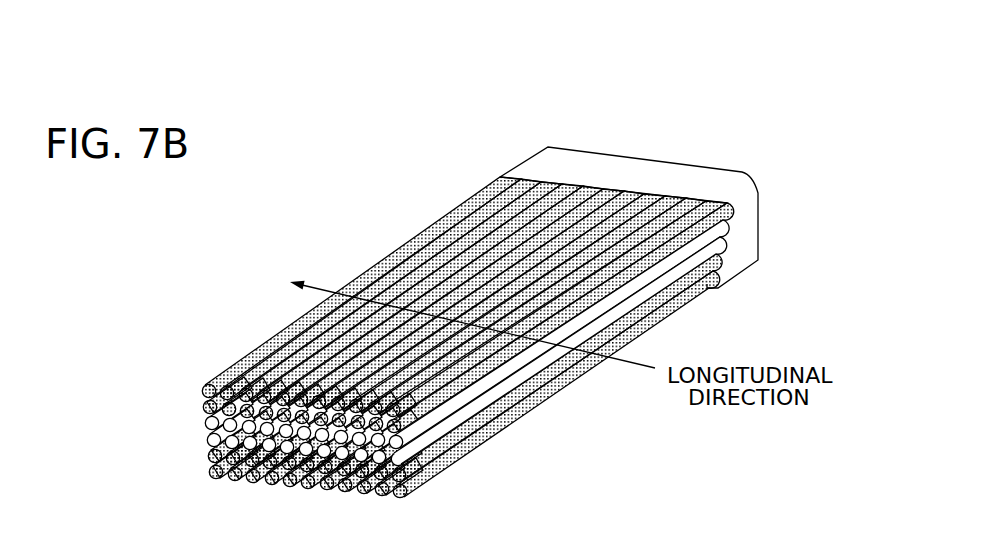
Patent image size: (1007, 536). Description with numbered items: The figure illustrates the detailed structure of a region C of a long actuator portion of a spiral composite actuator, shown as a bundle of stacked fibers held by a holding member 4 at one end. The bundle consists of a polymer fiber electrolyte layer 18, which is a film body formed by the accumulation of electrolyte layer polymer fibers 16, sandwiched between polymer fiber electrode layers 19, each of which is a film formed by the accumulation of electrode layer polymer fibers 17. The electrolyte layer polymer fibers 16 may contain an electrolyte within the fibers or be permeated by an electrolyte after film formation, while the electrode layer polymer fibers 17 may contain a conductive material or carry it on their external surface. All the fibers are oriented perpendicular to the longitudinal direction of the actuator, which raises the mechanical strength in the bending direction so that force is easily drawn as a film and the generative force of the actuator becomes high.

The holding member 4 is at (657, 172).
The region C is at (338, 200).
The electrolyte layer polymer fiber 16 is at (422, 442).
The electrode layer polymer fiber 17 is at (263, 345).
The polymer fiber electrolyte layer 18 is at (195, 417).
The polymer fiber electrode layer 19 is at (195, 385).